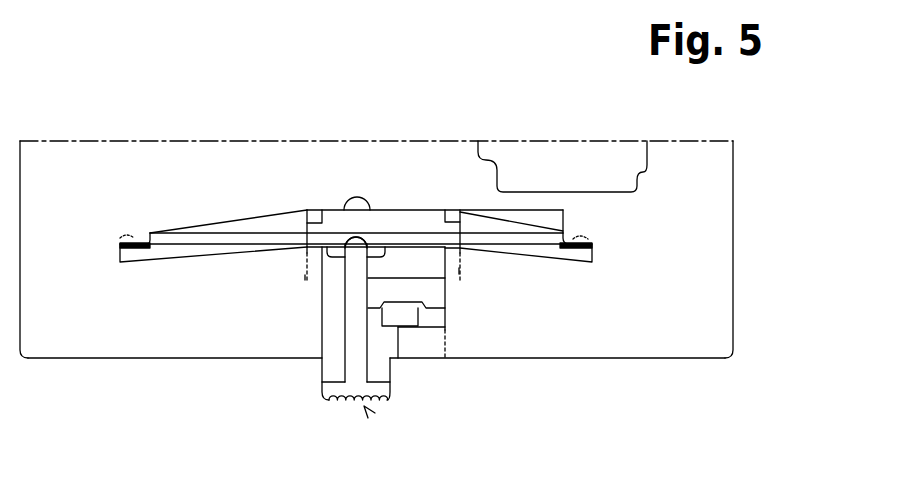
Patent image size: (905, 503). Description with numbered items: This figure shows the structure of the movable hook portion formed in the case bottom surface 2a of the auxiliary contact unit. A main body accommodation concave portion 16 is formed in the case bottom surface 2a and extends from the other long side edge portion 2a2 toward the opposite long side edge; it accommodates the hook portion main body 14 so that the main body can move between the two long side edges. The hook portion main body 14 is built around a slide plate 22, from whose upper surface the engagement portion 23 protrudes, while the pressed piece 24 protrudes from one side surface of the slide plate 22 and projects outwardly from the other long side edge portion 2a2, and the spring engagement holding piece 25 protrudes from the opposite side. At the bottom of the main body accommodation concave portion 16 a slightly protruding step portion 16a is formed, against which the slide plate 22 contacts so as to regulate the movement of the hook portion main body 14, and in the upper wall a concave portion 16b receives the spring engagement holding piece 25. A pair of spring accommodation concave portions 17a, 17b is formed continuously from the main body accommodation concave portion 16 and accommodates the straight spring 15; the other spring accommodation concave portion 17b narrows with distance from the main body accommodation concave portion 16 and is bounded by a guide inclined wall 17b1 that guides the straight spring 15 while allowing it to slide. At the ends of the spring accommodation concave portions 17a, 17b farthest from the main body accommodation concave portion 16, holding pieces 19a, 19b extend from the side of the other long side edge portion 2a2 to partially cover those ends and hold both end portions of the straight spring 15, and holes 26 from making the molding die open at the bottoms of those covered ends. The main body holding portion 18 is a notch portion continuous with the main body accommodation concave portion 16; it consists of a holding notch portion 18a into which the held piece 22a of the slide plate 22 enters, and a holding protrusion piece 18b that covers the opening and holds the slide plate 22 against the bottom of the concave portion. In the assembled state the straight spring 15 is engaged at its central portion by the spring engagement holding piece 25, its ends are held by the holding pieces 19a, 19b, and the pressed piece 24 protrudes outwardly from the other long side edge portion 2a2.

The case bottom surface 2a is at (718, 238).
The other long side edge portion 2a2 is at (658, 349).
The hook portion main body 14 is at (364, 406).
The straight spring 15 is at (174, 248).
The main body accommodation concave portion 16 is at (400, 224).
The step portion 16a is at (313, 208).
The concave portion 16b is at (357, 246).
The spring accommodation concave portion 17a is at (198, 252).
The other spring accommodation concave portion 17b is at (554, 255).
The guide inclined wall 17b1 is at (543, 220).
The main body holding portion 18 is at (373, 255).
The holding notch portion 18a is at (300, 258).
The holding protrusion piece 18b is at (430, 350).
The holding piece 19a is at (144, 234).
The holding piece 19b is at (580, 243).
The slide plate 22 is at (386, 362).
The held piece 22a is at (304, 274).
The engagement portion 23 is at (408, 320).
The pressed piece 24 is at (338, 404).
The spring engagement holding piece 25 is at (351, 197).
The hole from making molding die 26 is at (122, 245).